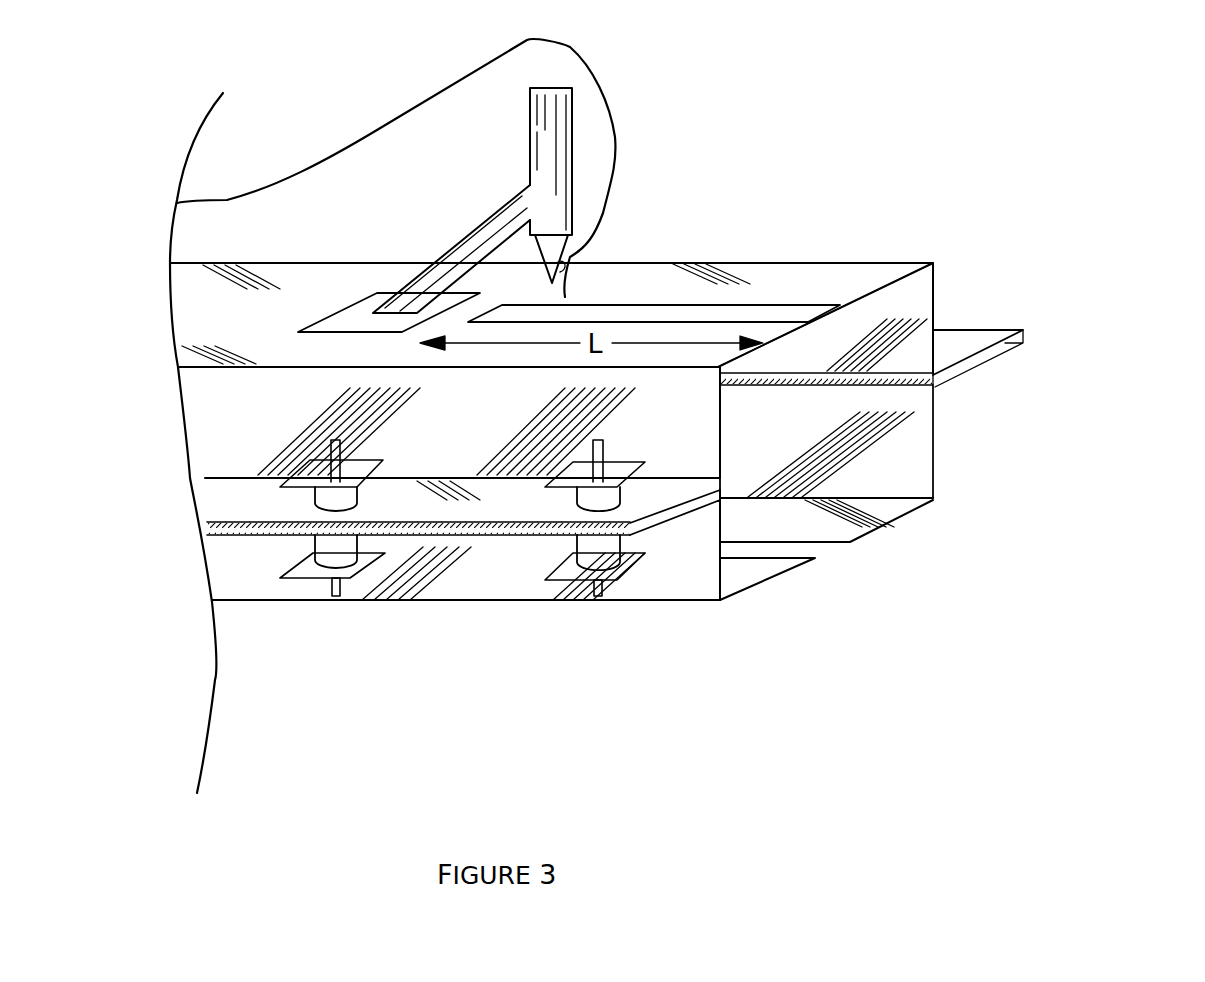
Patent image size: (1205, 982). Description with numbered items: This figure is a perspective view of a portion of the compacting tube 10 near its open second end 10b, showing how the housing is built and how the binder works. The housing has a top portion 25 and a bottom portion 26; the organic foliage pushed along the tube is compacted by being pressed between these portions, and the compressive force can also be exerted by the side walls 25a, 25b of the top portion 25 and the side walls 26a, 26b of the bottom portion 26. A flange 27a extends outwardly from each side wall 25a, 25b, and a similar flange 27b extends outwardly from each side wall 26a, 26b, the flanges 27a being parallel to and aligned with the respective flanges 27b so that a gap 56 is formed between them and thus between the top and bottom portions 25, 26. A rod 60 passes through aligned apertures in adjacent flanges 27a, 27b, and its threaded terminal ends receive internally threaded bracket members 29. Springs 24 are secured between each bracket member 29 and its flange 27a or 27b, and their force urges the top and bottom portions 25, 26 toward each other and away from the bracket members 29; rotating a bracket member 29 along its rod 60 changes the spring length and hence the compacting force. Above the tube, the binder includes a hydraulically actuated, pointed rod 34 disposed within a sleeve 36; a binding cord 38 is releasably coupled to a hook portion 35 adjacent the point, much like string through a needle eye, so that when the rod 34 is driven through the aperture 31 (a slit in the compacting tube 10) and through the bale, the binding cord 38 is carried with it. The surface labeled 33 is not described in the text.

The compacting tube 10 is at (913, 262).
The second end 10b is at (935, 300).
The spring 24 is at (328, 555).
The top portion 25 is at (840, 280).
The side wall of top portion 25a is at (925, 280).
The side wall of top portion 25b is at (720, 408).
The bottom portion 26 is at (857, 538).
The side wall of bottom portion 26a is at (900, 447).
The side wall of bottom portion 26b is at (720, 567).
The flange 27a is at (243, 495).
The flange 27b is at (980, 360).
The bracket member 29 is at (617, 468).
The aperture 31 is at (763, 317).
The surface 33 is at (847, 523).
The rod 34 is at (550, 250).
The hook portion 35 is at (573, 268).
The sleeve 36 is at (550, 127).
The binding cord 38 is at (350, 133).
The gap 56 is at (1027, 338).
The rod 60 is at (327, 450).